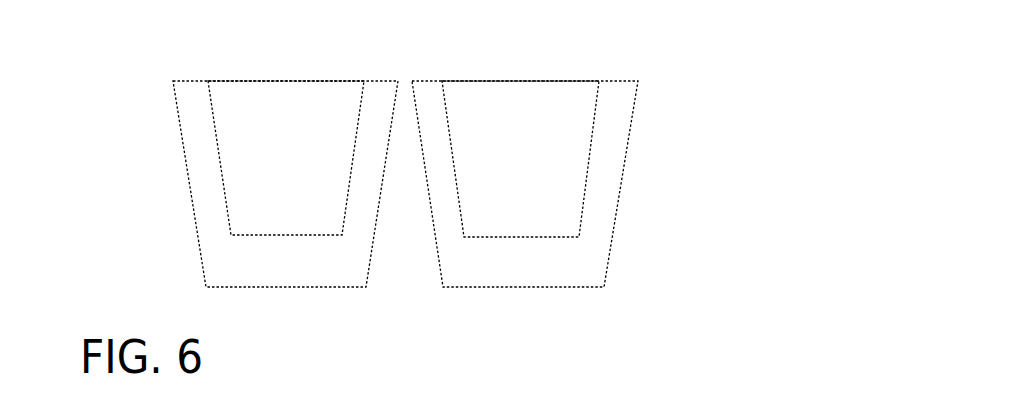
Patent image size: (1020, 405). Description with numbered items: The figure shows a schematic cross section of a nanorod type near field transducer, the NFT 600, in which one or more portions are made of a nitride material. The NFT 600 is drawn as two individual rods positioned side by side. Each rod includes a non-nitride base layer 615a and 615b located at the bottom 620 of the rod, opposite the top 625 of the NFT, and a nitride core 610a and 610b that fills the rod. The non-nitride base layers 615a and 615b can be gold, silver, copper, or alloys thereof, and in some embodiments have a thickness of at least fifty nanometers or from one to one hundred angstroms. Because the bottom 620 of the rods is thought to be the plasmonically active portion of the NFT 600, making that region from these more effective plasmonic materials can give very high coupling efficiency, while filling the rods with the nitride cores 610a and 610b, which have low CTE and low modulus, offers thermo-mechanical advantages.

The NFT 600 is at (717, 128).
The nitride core 610a is at (308, 160).
The nitride core 610b is at (553, 164).
The non-nitride base layer 615a is at (202, 228).
The non-nitride base layer 615b is at (608, 202).
The bottom 620 is at (406, 304).
The top 625 is at (405, 65).